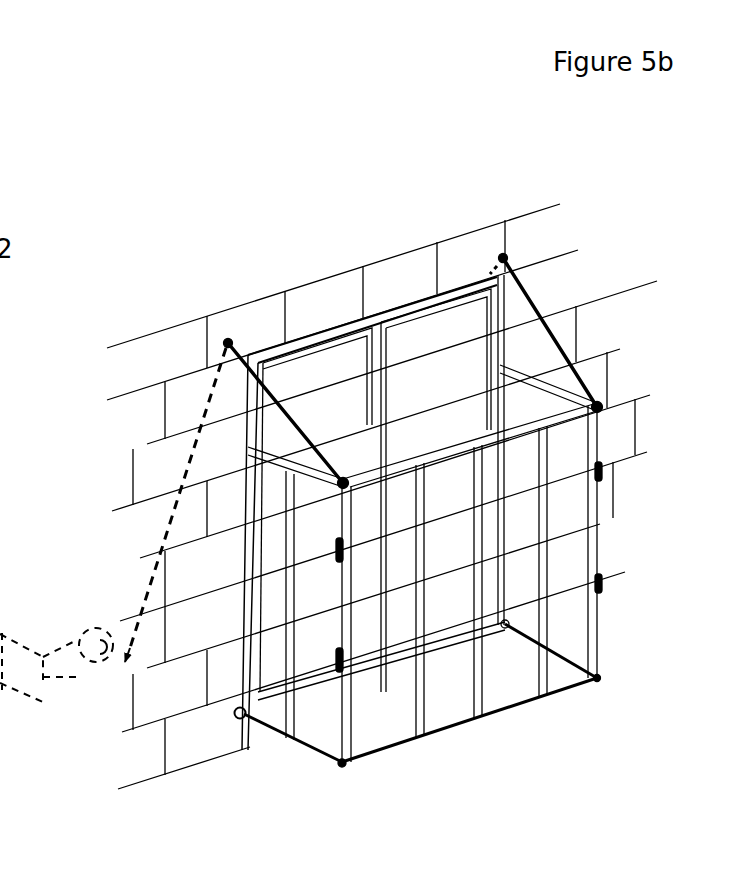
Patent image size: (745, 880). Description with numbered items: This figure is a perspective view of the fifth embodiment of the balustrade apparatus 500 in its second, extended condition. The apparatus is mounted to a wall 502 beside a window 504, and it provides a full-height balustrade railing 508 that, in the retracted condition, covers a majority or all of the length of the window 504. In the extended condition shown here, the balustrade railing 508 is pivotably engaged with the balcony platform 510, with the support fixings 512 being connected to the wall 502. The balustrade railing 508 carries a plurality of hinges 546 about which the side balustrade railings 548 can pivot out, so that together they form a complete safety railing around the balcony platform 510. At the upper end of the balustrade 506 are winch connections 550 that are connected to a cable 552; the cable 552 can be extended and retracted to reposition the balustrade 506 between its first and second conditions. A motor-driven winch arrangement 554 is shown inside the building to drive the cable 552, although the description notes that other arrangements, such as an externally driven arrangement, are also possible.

The balustrade apparatus 500 is at (135, 228).
The wall 502 is at (612, 267).
The window 504 is at (405, 325).
The balustrade 506 is at (625, 436).
The balustrade railing 508 is at (545, 549).
The balcony platform 510 is at (434, 714).
The support fixings 512 is at (238, 724).
The hinges 546 is at (605, 469).
The side balustrade railings 548 is at (557, 379).
The winch connections 550 is at (341, 475).
The cable 552 is at (244, 351).
The motor-driven winch arrangement 554 is at (43, 700).